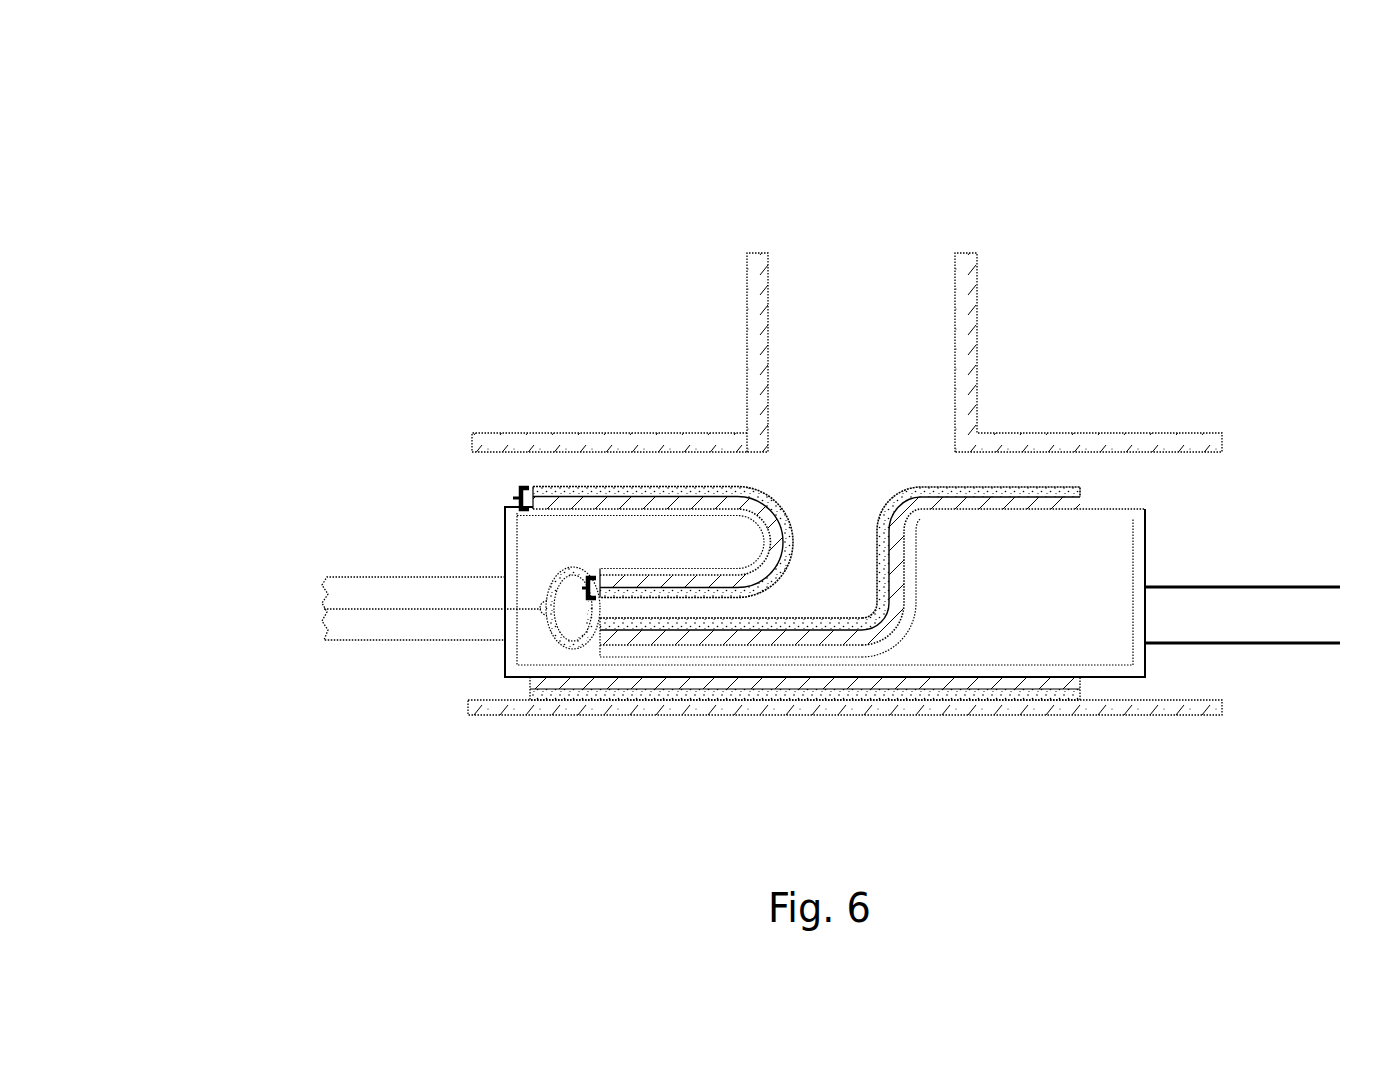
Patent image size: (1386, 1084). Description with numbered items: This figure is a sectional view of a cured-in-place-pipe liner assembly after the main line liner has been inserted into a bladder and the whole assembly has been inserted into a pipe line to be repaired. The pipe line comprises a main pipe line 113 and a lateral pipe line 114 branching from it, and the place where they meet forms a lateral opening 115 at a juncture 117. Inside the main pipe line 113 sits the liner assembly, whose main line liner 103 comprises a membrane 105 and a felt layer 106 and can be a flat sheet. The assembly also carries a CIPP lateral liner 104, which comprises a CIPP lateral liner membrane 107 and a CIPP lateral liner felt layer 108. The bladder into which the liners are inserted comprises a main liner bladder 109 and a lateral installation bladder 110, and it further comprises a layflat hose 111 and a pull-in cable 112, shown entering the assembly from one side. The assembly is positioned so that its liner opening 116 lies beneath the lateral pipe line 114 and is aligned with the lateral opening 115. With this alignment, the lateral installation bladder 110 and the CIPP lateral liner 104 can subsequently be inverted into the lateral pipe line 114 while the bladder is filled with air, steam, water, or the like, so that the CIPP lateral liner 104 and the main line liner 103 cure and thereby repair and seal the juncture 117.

The main line liner 103 is at (508, 492).
The CIPP lateral liner 104 is at (584, 588).
The membrane 105 is at (1067, 505).
The felt layer 106 is at (1067, 492).
The CIPP lateral liner membrane 107 is at (708, 638).
The CIPP lateral liner felt layer 108 is at (683, 621).
The main liner bladder 109 is at (1118, 670).
The lateral installation bladder 110 is at (908, 567).
The layflat hose 111 is at (397, 573).
The pull-in cable 112 is at (340, 607).
The main pipe line 113 is at (572, 440).
The lateral pipe line 114 is at (757, 305).
The lateral opening 115 is at (915, 445).
The liner opening 116 is at (848, 518).
The juncture 117 is at (977, 433).